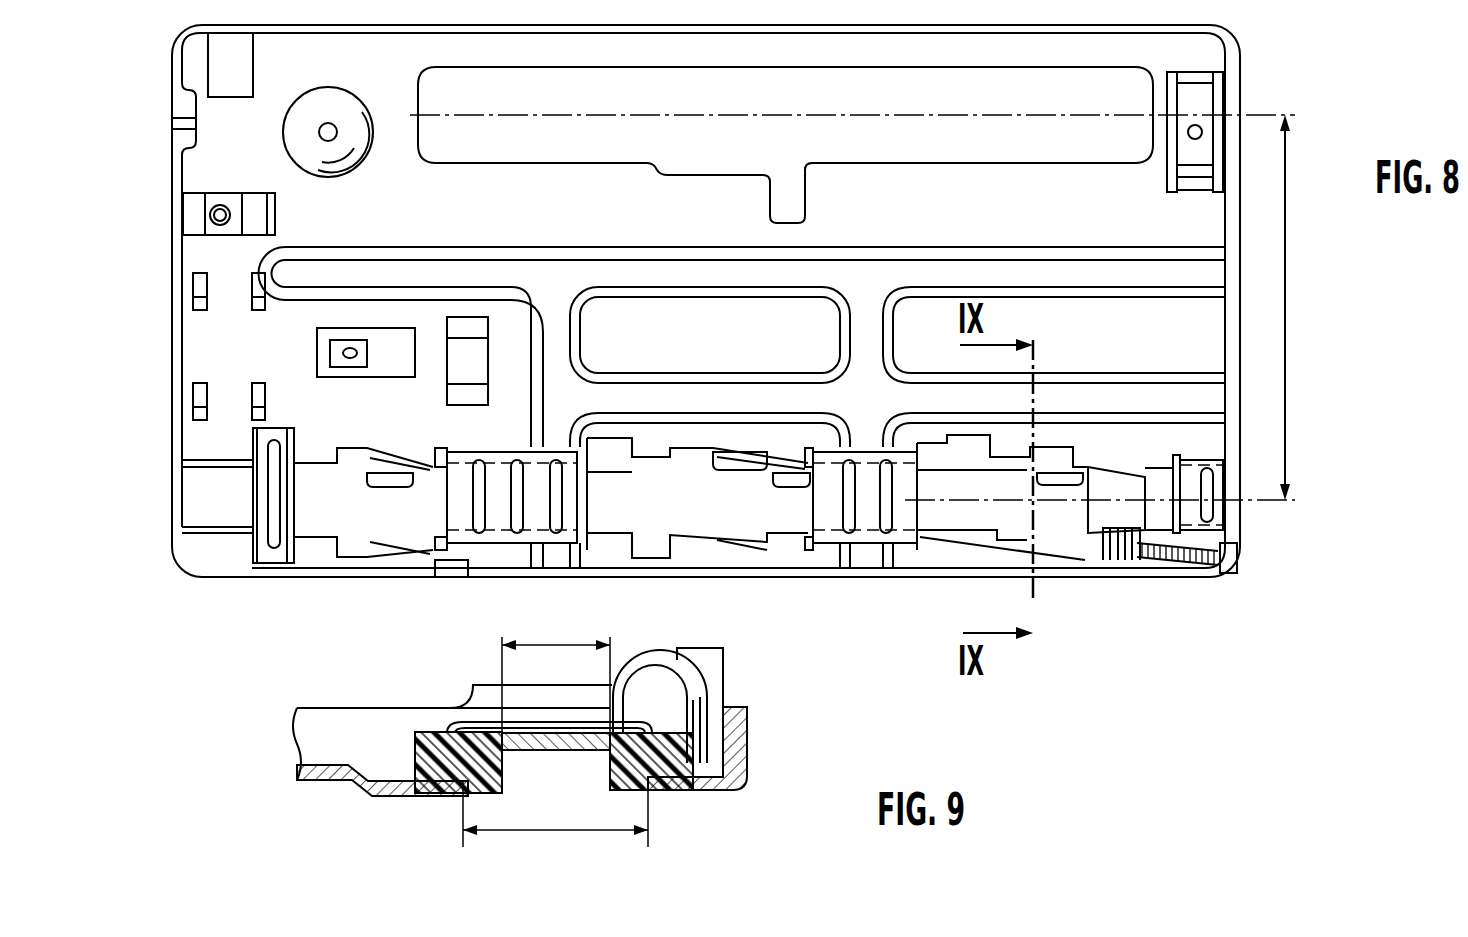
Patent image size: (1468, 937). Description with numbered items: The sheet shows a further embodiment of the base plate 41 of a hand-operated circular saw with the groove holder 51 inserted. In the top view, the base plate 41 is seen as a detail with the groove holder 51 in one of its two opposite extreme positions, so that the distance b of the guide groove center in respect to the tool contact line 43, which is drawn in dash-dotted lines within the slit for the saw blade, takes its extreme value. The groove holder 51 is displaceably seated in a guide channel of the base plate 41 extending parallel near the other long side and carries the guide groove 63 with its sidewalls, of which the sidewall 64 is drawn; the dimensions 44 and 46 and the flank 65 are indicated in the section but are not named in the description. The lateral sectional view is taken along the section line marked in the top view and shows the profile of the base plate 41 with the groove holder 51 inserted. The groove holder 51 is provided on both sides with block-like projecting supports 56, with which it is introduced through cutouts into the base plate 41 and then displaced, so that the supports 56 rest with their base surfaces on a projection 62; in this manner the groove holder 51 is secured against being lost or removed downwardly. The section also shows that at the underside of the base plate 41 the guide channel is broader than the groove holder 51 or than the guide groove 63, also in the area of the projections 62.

In FIG. 8, the base plate 41 is at (810, 585).
In FIG. 9, the base plate 41 is at (752, 780).
In FIG. 8, the tool contact line 43 is at (957, 117).
In FIG. 8, the groove holder 51 is at (1063, 538).
In FIG. 8, the distance b is at (1285, 316).
In FIG. 9, the groove width 44 is at (565, 608).
In FIG. 9, the opening width 46 is at (563, 833).
In FIG. 9, the supports 56 is at (443, 753).
In FIG. 9, the projection 62 is at (447, 790).
In FIG. 9, the guide groove 63 is at (550, 765).
In FIG. 9, the sidewall 64 is at (603, 757).
In FIG. 9, the flank 65 is at (510, 763).